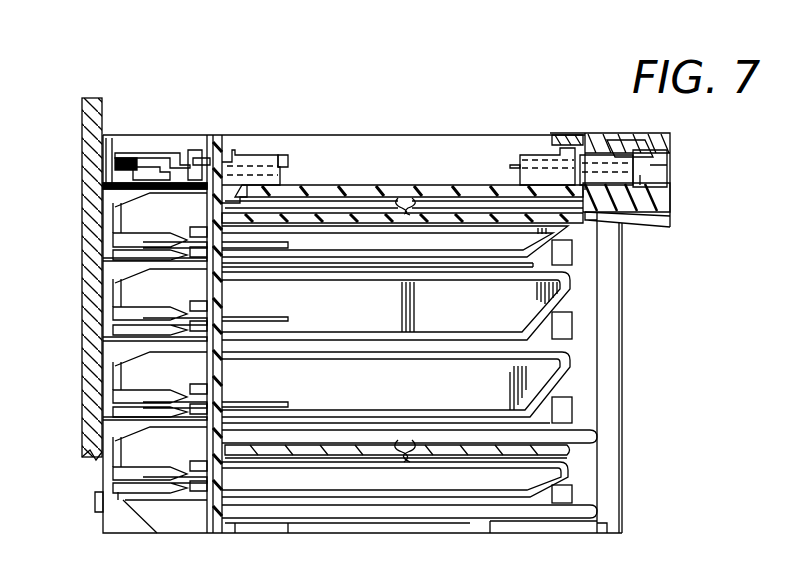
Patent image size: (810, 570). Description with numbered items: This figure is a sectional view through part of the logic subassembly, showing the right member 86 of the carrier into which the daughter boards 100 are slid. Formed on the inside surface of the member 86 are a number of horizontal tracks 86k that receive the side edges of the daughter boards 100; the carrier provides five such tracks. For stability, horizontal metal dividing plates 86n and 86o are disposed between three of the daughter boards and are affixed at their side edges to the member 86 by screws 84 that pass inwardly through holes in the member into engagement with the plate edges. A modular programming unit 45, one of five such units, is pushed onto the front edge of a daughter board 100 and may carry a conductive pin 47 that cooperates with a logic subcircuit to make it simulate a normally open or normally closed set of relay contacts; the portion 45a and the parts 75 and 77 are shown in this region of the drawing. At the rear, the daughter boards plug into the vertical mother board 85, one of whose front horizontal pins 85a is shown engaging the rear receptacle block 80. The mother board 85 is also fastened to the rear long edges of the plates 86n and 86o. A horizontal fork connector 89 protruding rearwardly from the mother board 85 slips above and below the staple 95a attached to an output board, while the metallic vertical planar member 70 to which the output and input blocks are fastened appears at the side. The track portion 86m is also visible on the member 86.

The modular programming unit 45 is at (592, 162).
The connector block portion 45a is at (648, 150).
The conductive pin 47 is at (511, 166).
The metallic vertical planar member 70 is at (84, 350).
The contact block 75 is at (539, 165).
The contact block 77 is at (598, 162).
The receptacle block 80 is at (258, 167).
The screw 84 is at (404, 444).
The mother board 85 is at (225, 290).
The front horizontal pin 85a is at (198, 160).
The right member 86 is at (590, 490).
The horizontal track 86k is at (498, 290).
The hairpin contact 86m is at (572, 363).
The horizontal metal dividing plate 86n is at (572, 224).
The horizontal metal dividing plate 86o is at (572, 448).
The fork connector 89 is at (122, 158).
The staple 95a is at (150, 180).
The daughter board 100 is at (410, 170).